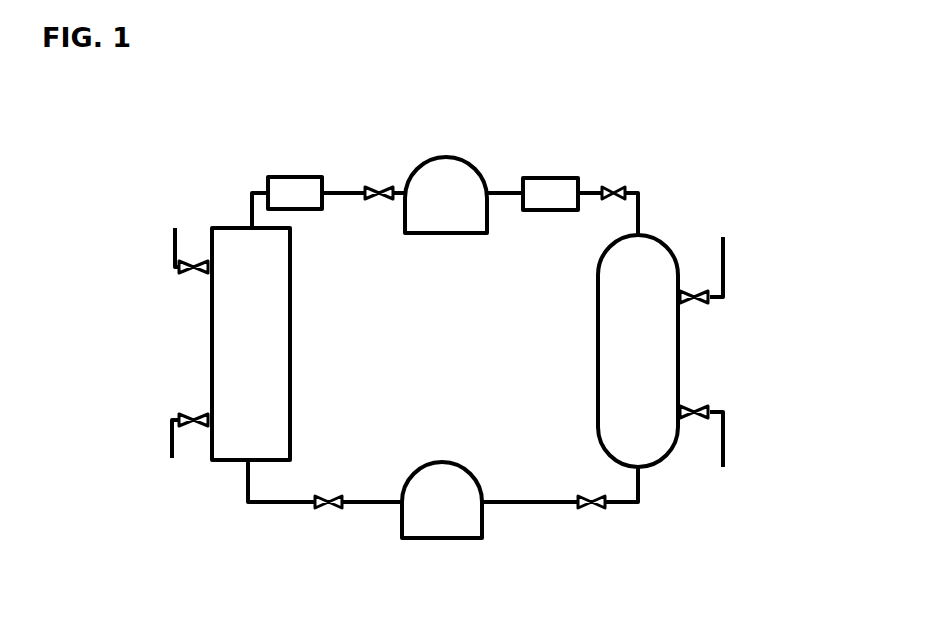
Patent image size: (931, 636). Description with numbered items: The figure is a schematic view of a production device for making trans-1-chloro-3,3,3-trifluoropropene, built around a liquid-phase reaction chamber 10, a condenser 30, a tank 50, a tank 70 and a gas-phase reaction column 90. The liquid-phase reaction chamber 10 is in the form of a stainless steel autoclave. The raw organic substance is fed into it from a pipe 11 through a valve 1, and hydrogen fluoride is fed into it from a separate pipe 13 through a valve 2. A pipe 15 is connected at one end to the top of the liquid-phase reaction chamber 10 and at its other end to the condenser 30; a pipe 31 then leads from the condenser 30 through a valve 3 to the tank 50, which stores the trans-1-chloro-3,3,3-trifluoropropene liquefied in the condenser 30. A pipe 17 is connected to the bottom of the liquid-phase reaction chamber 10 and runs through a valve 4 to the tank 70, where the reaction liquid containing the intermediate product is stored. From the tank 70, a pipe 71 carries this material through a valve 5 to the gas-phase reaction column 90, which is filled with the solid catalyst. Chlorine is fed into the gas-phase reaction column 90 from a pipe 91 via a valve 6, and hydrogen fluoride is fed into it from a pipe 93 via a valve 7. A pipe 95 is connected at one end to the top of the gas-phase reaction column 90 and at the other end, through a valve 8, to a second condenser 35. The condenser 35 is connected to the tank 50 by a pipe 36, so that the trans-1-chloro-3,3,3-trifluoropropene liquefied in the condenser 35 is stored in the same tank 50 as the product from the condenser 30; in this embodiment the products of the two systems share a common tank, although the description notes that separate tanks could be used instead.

The valve 1 is at (178, 272).
The valve 2 is at (183, 412).
The valve 3 is at (365, 193).
The valve 4 is at (320, 503).
The valve 5 is at (605, 505).
The valve 6 is at (703, 300).
The valve 7 is at (700, 408).
The valve 8 is at (620, 190).
The liquid-phase reaction chamber 10 is at (290, 408).
The pipe 11 is at (172, 240).
The pipe 13 is at (170, 440).
The pipe 15 is at (248, 205).
The pipe 17 is at (248, 495).
The condenser 30 is at (295, 177).
The pipe 31 is at (345, 200).
The condenser 35 is at (573, 178).
The pipe 36 is at (493, 195).
The tank 50 is at (447, 160).
The tank 70 is at (470, 470).
The pipe 71 is at (505, 505).
The gas-phase reaction column 90 is at (598, 398).
The pipe 91 is at (723, 270).
The pipe 93 is at (723, 440).
The pipe 95 is at (640, 218).